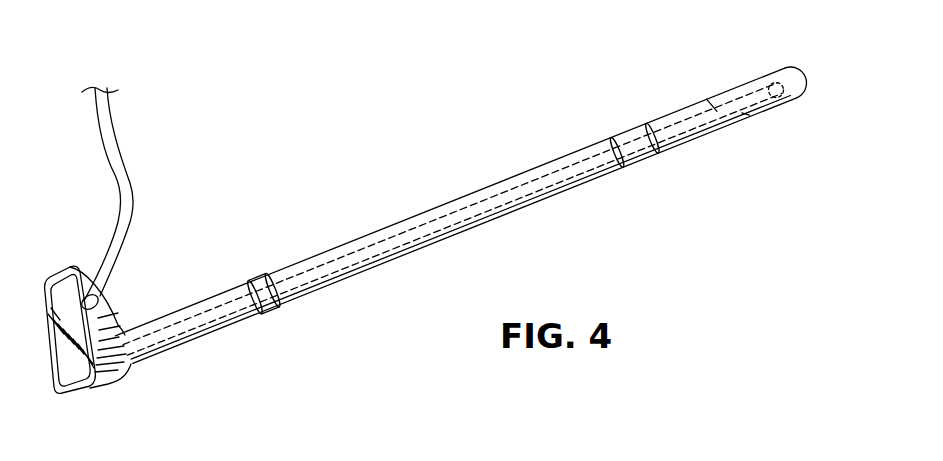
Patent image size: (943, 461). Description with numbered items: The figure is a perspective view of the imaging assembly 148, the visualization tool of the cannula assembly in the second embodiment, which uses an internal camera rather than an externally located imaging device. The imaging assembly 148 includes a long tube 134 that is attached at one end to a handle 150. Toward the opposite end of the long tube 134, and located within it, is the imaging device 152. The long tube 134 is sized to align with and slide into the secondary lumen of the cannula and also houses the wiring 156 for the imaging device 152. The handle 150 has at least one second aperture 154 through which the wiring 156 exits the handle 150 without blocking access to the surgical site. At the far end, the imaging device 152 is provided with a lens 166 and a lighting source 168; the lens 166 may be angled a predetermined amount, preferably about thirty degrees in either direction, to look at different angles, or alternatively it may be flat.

The imaging assembly 148 is at (366, 167).
The long tube 134 is at (321, 289).
The handle 150 is at (109, 386).
The imaging device 152 is at (745, 114).
The second aperture 154 is at (82, 290).
The wiring 156 is at (133, 196).
The lens 166 is at (801, 76).
The lighting source 168 is at (794, 101).